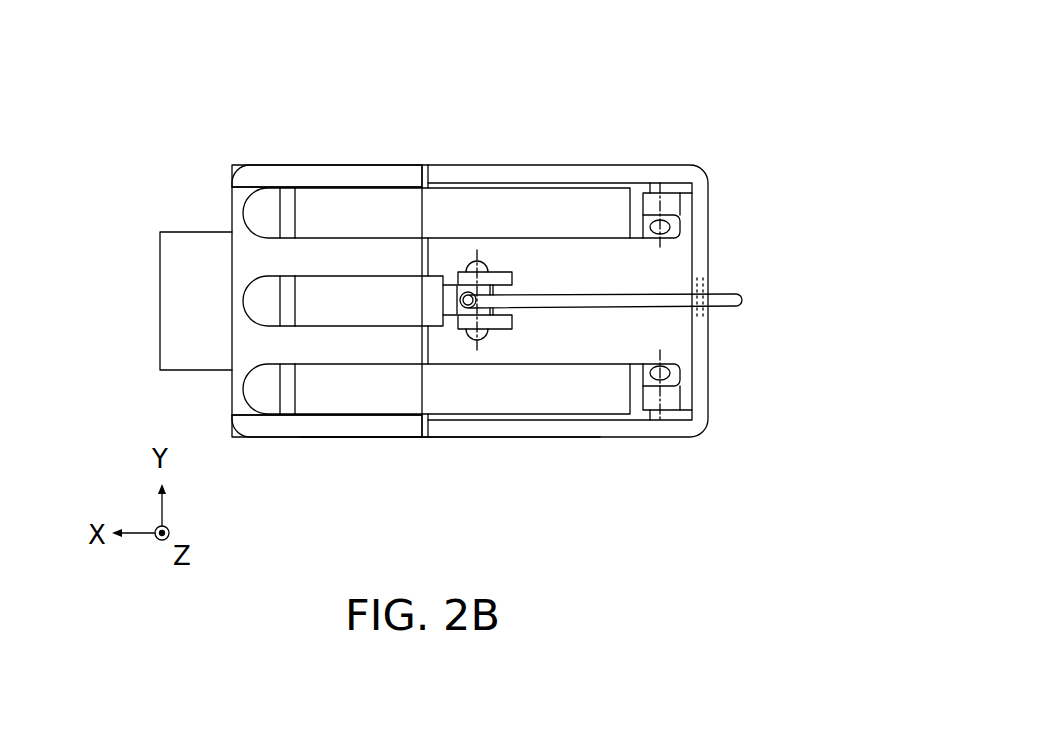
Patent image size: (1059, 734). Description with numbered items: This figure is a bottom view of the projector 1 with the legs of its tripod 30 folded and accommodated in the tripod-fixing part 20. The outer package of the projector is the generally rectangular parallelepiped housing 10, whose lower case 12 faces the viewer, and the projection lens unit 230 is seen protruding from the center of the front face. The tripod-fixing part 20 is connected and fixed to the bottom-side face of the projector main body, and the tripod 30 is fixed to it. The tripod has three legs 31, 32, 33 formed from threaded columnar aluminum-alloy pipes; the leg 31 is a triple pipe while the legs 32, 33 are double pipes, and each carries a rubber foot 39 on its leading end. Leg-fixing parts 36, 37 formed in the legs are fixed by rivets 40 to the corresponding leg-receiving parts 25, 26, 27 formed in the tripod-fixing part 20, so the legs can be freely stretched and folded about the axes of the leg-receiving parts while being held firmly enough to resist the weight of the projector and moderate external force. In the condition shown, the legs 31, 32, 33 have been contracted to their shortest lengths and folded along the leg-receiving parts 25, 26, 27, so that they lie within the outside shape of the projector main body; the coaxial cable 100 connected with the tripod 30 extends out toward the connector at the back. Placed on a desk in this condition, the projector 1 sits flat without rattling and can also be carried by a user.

The projector 1 is at (636, 101).
The housing 10 is at (401, 499).
The lower case 12 is at (390, 438).
The tripod-fixing part 20 is at (478, 156).
The leg-receiving part 25 is at (513, 277).
The leg-receiving part 26 is at (687, 198).
The leg-receiving part 27 is at (687, 403).
The tripod 30 is at (347, 117).
The leg 31 is at (354, 327).
The leg 32 is at (323, 185).
The leg 33 is at (330, 417).
The leg-fixing part 36 is at (670, 190).
The leg-fixing part 37 is at (670, 406).
The rubber foot 39 is at (242, 213).
The rivet 40 is at (672, 227).
The coaxial cable 100 is at (745, 298).
The projection lens unit 230 is at (153, 216).